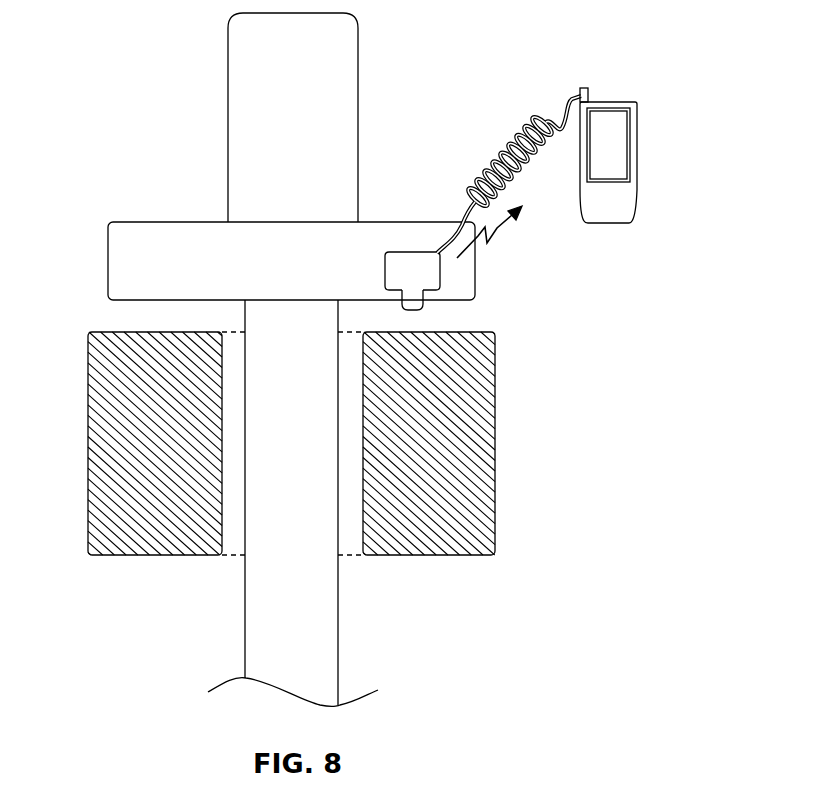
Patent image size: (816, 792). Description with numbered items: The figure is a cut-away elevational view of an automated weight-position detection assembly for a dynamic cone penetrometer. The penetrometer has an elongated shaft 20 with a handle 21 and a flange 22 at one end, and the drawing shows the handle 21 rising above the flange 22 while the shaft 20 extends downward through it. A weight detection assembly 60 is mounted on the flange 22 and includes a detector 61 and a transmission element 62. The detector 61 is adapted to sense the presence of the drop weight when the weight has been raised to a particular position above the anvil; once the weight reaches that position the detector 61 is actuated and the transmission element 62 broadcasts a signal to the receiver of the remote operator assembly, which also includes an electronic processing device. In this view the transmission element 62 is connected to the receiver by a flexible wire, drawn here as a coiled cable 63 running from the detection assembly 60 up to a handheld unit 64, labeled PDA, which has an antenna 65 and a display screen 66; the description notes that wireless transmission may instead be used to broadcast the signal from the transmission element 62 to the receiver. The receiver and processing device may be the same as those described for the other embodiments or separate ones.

The elongated shaft 20 is at (325, 616).
The handle 21 is at (240, 130).
The flange 22 is at (120, 262).
The weight detection assembly 60 is at (433, 255).
The detector 61 is at (420, 305).
The transmission element 62 is at (435, 272).
The coiled cable 63 is at (495, 160).
The PDA handheld device 64 is at (651, 163).
The PDA antenna 65 is at (592, 100).
The PDA display screen 66 is at (640, 146).